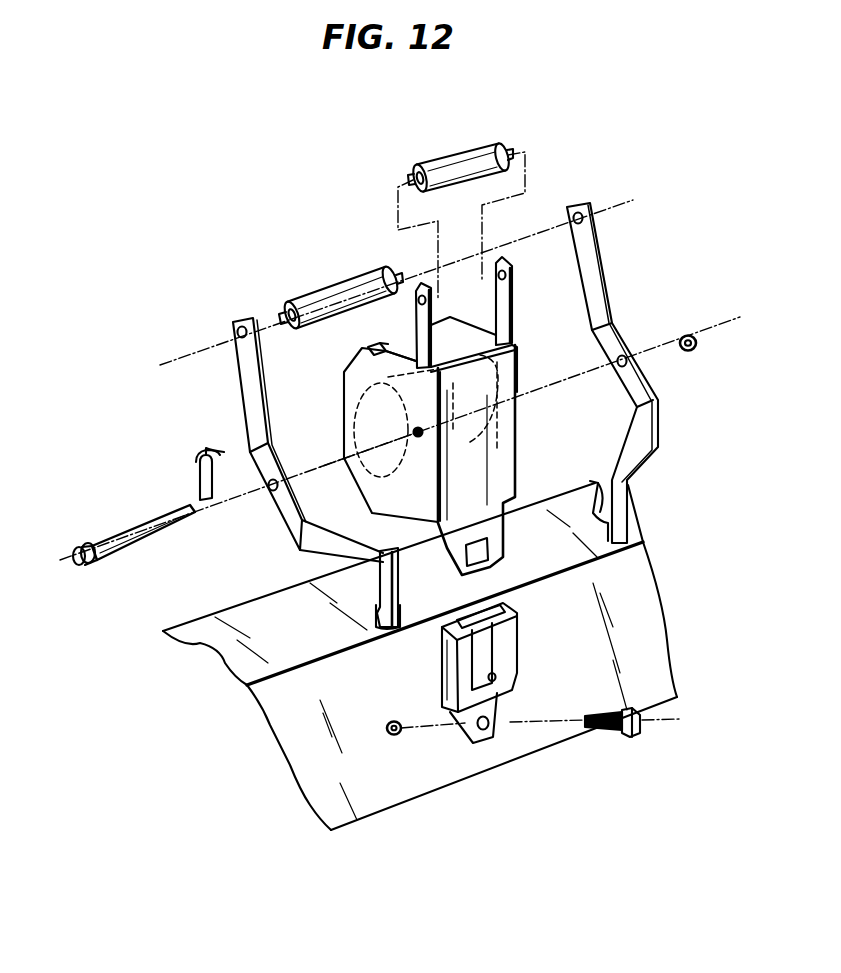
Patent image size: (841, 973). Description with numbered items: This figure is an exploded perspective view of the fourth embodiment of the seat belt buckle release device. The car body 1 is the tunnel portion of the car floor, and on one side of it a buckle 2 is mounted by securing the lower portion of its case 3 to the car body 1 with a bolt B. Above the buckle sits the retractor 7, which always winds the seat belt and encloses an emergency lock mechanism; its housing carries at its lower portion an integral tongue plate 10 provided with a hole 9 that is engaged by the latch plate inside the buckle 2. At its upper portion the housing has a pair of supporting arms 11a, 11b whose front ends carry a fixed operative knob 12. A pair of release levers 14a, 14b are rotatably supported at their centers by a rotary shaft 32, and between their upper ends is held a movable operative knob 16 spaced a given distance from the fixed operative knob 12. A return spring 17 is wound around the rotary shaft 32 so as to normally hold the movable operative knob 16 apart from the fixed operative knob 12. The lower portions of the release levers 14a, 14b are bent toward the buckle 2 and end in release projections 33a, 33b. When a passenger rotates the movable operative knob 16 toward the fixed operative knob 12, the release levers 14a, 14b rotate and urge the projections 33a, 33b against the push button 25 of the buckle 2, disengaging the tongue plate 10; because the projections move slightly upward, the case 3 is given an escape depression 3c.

The car body 1 is at (650, 623).
The buckle 2 is at (457, 668).
The case 3 is at (513, 620).
The escape depression 3c is at (490, 647).
The retractor 7 is at (498, 423).
The hole 9 is at (502, 548).
The tongue plate 10 is at (457, 543).
The supporting arm 11a is at (414, 327).
The supporting arm 11b is at (514, 304).
The fixed operative knob 12 is at (460, 166).
The release lever 14a is at (248, 383).
The release lever 14b is at (606, 318).
The movable operative knob 16 is at (353, 290).
The return spring 17 is at (198, 470).
The push button 25 is at (495, 678).
The rotary shaft 32 is at (153, 523).
The release projection 33a is at (377, 617).
The release projection 33b is at (598, 482).
The bolt B is at (610, 733).